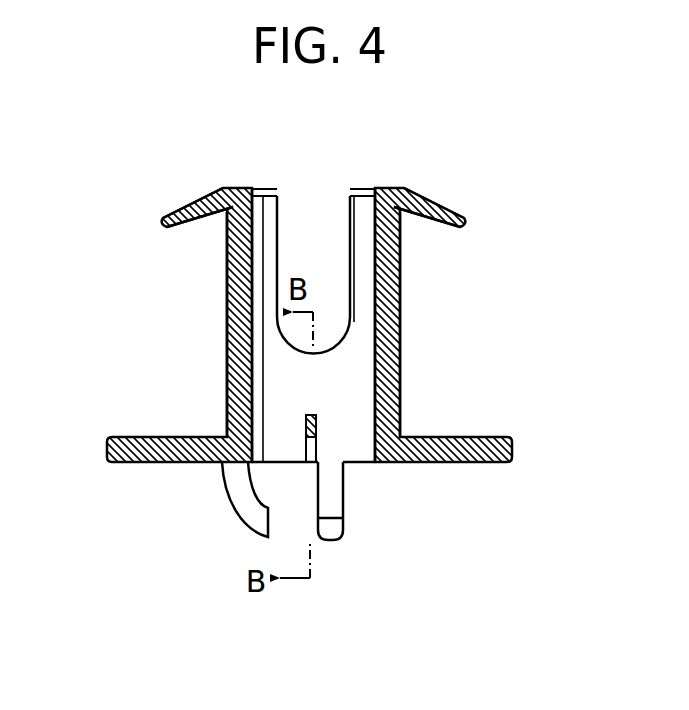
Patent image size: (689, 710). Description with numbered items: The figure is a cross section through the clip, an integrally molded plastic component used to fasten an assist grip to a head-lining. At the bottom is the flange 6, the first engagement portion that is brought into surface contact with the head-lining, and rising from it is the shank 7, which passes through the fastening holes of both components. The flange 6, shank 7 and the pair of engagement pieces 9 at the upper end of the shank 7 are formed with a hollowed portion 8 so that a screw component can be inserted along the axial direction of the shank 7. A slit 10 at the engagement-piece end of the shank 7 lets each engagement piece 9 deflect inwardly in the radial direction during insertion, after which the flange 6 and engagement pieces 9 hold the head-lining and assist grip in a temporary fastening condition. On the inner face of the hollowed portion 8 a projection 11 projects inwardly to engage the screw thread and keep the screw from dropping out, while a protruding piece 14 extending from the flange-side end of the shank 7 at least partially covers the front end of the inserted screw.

The flange 6 is at (158, 441).
The shank 7 is at (227, 281).
The hollowed portion 8 is at (363, 343).
The engagement piece 9 is at (196, 202).
The slit 10 is at (276, 219).
The projection 11 is at (320, 438).
The protruding piece 14 is at (253, 512).